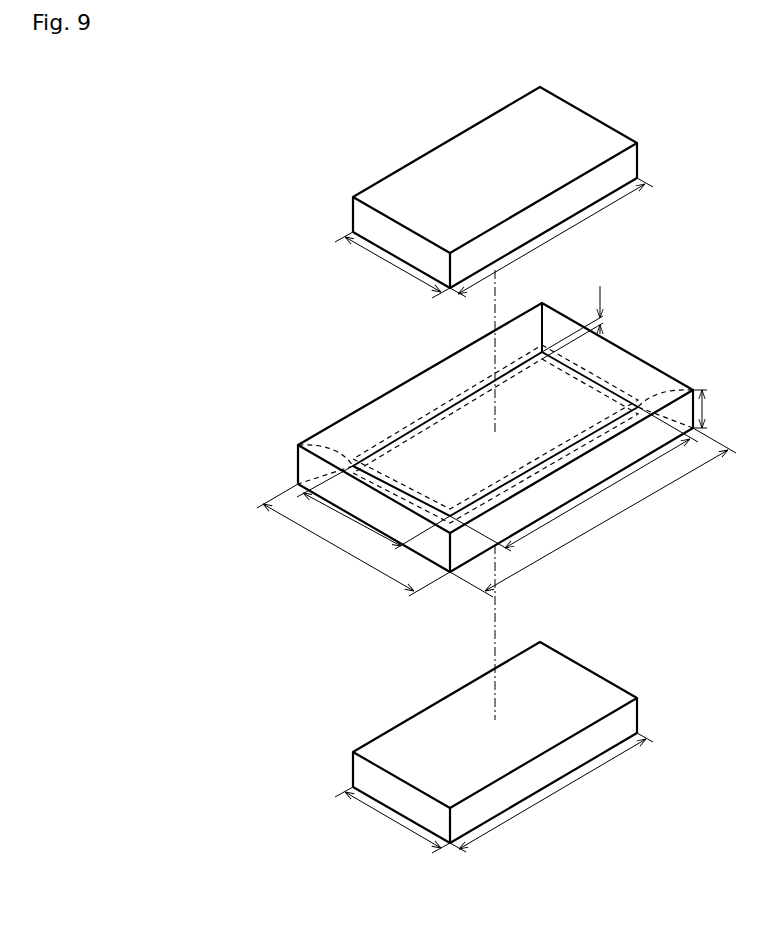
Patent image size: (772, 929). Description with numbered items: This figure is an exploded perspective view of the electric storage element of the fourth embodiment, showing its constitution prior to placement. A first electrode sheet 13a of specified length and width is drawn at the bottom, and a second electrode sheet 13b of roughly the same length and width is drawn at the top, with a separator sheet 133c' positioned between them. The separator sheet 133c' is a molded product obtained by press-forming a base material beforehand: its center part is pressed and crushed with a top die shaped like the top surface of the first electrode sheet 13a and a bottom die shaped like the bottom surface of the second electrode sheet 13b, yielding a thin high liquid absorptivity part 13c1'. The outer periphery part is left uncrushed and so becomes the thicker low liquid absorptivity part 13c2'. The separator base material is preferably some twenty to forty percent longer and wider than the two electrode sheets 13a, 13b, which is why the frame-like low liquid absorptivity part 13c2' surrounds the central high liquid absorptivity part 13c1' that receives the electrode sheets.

The first electrode sheet 13a is at (390, 744).
The second electrode sheet 13b is at (390, 190).
The separator sheet 133c' is at (496, 441).
The high liquid absorptivity part 13c1' is at (495, 413).
The low liquid absorptivity part 13c2' is at (495, 437).